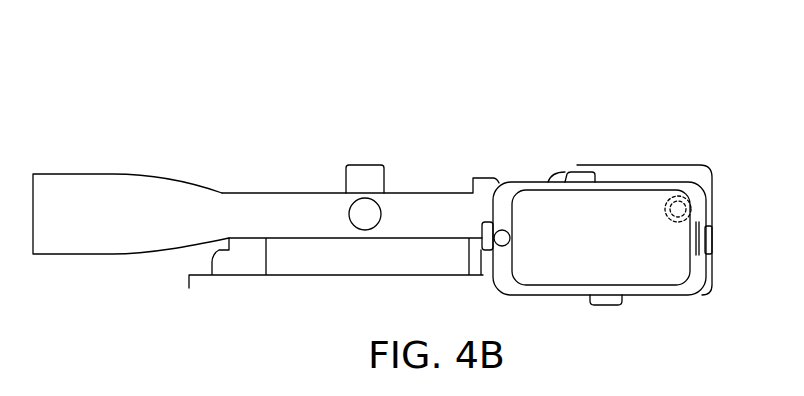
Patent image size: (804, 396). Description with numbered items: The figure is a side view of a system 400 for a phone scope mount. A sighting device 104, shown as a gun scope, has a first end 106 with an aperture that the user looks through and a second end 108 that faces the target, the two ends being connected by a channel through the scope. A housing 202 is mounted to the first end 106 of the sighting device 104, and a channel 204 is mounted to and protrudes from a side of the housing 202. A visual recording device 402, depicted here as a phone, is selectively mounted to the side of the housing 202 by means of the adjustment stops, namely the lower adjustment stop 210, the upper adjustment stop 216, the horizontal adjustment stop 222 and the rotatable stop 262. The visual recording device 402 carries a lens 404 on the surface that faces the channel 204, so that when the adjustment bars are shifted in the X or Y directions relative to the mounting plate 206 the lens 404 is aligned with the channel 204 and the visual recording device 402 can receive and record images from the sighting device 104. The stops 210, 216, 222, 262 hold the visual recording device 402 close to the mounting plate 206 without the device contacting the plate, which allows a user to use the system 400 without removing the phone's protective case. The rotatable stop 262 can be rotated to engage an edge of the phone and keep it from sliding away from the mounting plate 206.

The system for a phone scope mount 400 is at (116, 49).
The sighting device 104 is at (398, 132).
The second end 108 is at (93, 180).
The first end 106 is at (558, 176).
The upper adjustment stop 216 is at (585, 172).
The housing 202 is at (660, 173).
The channel 204 is at (686, 198).
The lens 404 is at (695, 208).
The rotatable stop 262 is at (711, 238).
The visual recording device 402 is at (531, 278).
The horizontal adjustment stop 222 is at (485, 276).
The lower adjustment stop 210 is at (602, 305).
The mounting plate 206 is at (729, 340).